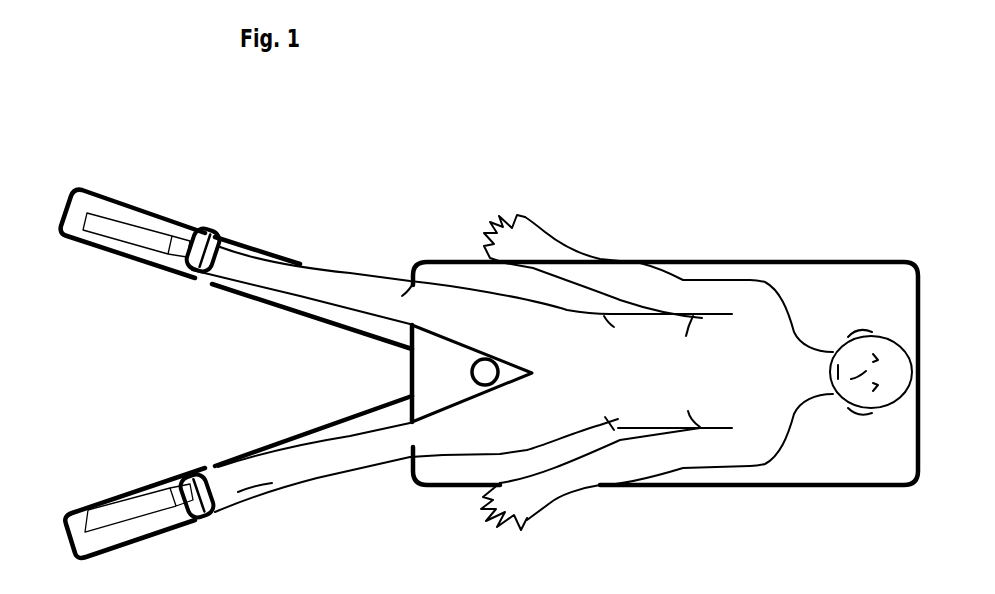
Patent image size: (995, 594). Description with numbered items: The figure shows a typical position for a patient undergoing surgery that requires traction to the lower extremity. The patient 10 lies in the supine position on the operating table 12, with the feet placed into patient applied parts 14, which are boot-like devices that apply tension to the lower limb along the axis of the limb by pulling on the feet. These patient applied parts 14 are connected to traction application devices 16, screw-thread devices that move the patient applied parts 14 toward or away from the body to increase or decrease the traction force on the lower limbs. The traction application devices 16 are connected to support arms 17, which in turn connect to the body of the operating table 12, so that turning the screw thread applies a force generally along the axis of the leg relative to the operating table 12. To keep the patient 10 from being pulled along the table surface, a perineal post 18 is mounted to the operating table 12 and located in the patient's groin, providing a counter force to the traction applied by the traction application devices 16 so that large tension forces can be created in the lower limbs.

The patient 10 is at (573, 330).
The operating table 12 is at (877, 302).
The patient applied parts 14 is at (208, 237).
The traction application devices 16 is at (99, 226).
The support arms 17 is at (337, 320).
The perineal post 18 is at (483, 372).